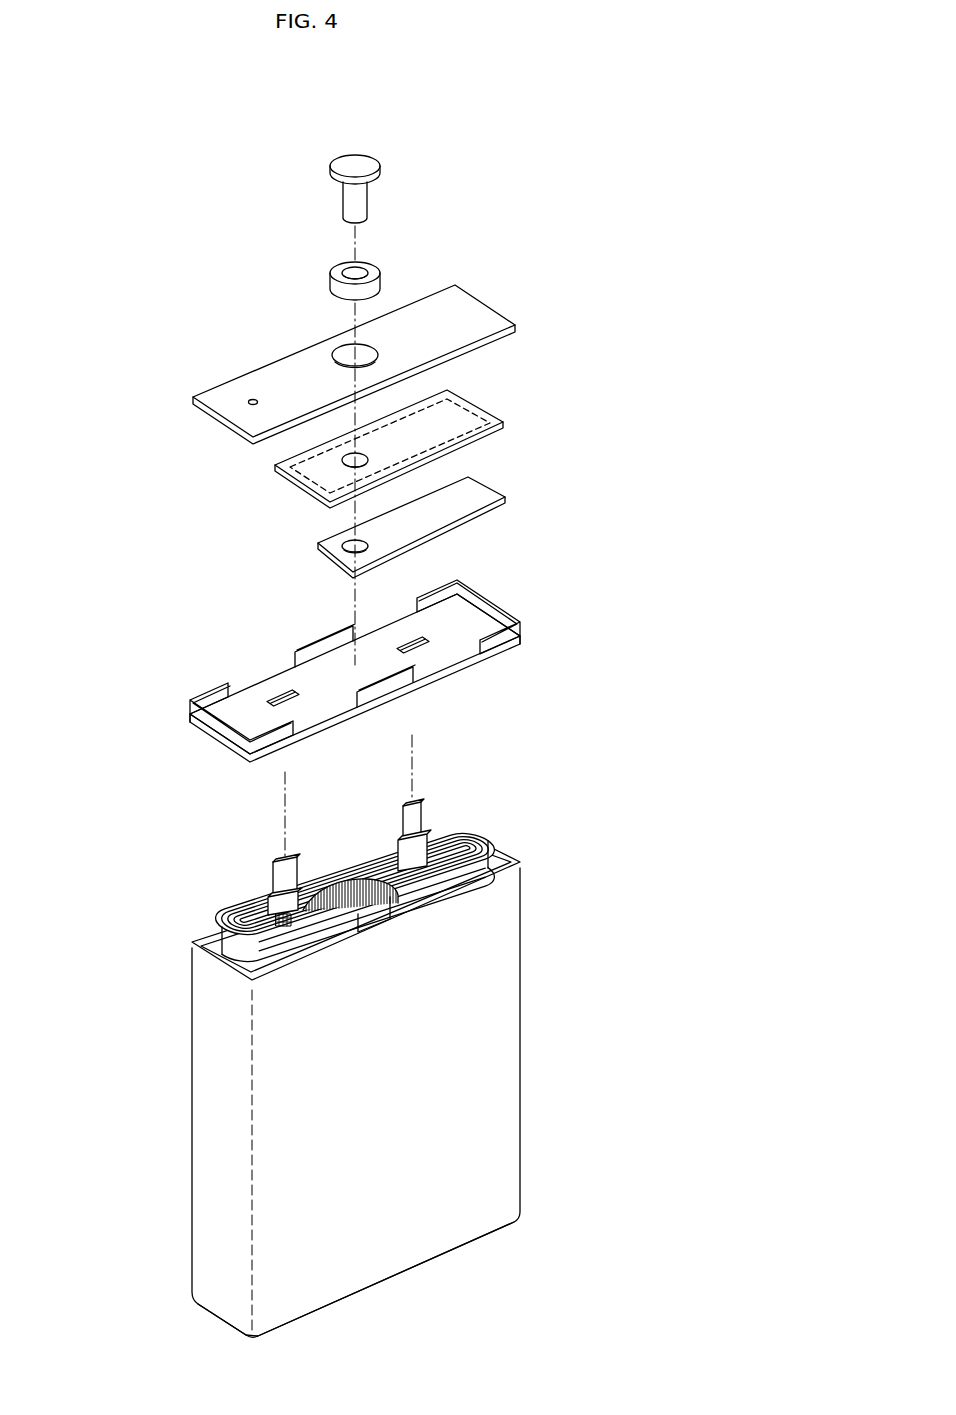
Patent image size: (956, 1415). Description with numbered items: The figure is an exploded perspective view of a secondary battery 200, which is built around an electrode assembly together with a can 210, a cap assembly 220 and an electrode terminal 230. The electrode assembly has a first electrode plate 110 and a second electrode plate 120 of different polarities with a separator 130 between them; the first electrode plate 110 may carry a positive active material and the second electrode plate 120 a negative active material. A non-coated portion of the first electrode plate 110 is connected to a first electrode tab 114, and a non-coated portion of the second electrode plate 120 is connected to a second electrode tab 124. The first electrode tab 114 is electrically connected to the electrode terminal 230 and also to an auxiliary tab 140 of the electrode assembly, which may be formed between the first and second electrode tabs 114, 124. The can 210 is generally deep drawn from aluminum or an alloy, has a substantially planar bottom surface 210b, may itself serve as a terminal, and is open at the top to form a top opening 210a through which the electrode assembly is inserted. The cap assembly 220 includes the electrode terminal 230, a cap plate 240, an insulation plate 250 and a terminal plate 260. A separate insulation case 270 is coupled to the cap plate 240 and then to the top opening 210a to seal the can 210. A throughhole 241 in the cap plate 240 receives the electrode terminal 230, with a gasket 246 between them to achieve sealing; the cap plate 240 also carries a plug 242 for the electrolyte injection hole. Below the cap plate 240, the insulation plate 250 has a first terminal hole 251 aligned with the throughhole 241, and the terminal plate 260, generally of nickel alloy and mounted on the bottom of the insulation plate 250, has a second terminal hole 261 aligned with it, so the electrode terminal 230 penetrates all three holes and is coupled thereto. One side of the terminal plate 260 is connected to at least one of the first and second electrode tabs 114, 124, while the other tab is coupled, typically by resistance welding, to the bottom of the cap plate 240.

The secondary battery 200 is at (137, 179).
The first electrode plate 110 is at (556, 762).
The first electrode tab 114 is at (275, 878).
The second electrode plate 120 is at (461, 828).
The second electrode tab 124 is at (404, 823).
The separator 130 is at (477, 833).
The auxiliary tab 140 is at (383, 913).
The can 210 is at (500, 1042).
The top opening 210a is at (507, 853).
The bottom surface 210b is at (492, 1235).
The cap assembly 220 is at (588, 156).
The electrode terminal 230 is at (363, 168).
The cap plate 240 is at (470, 302).
The throughhole 241 is at (345, 350).
The plug 242 is at (250, 400).
The gasket 246 is at (336, 272).
The insulation plate 250 is at (488, 403).
The first terminal hole 251 is at (338, 466).
The terminal plate 260 is at (478, 488).
The second terminal hole 261 is at (348, 552).
The insulation case 270 is at (196, 713).